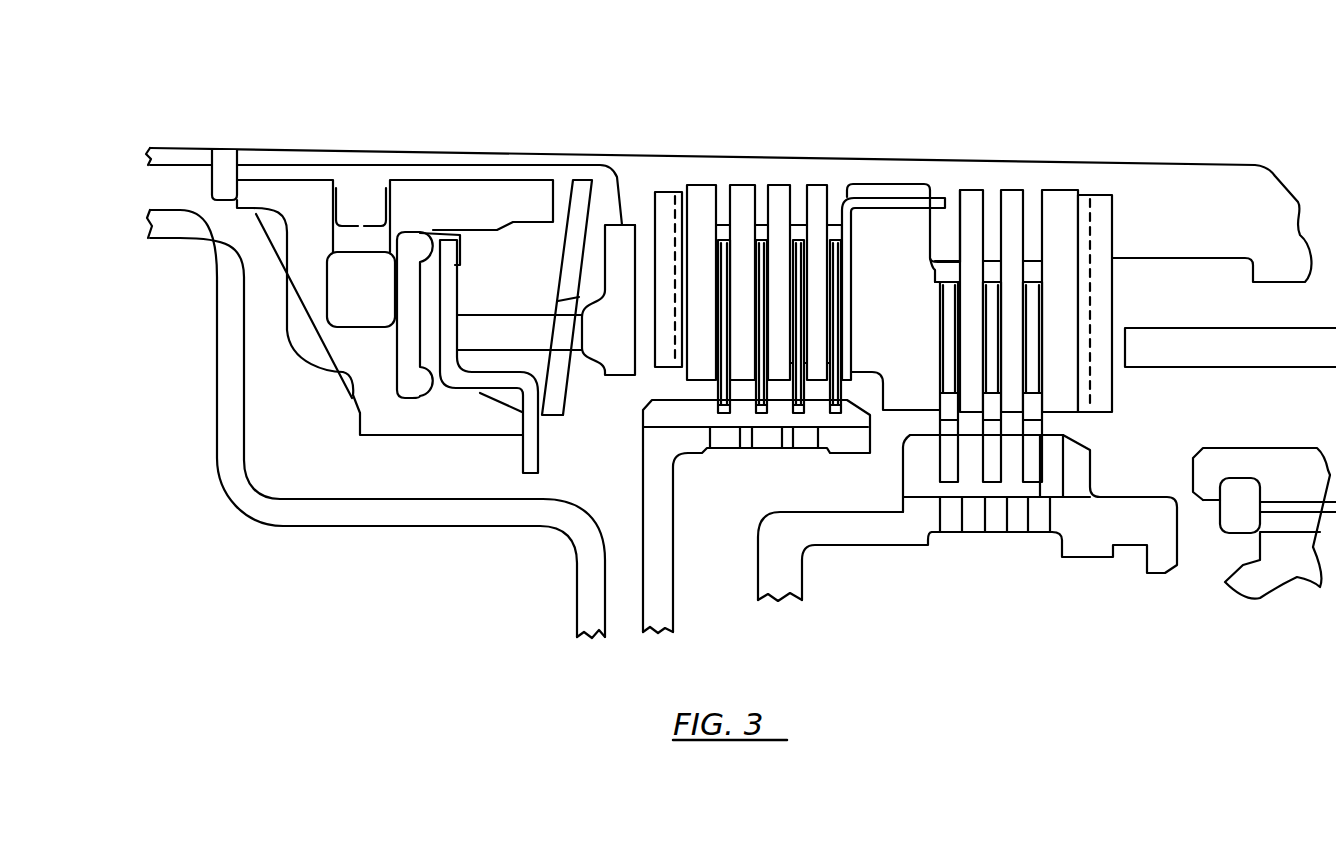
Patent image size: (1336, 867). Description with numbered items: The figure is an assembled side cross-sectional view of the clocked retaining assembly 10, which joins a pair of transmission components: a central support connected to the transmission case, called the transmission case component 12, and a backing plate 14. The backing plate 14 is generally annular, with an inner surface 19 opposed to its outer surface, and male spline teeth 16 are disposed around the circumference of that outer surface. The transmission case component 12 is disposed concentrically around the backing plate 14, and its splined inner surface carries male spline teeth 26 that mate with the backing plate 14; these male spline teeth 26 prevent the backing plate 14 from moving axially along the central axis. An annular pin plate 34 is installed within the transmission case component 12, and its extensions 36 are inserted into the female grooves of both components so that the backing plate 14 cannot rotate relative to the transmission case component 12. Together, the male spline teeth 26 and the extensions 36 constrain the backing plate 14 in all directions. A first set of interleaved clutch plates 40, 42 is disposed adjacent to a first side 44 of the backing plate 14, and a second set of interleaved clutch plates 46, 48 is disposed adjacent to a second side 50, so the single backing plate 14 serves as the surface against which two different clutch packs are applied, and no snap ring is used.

The clocked retaining assembly 10 is at (1185, 125).
The transmission case component 12 is at (638, 197).
The backing plate 14 is at (947, 225).
The male spline teeth 16 is at (875, 190).
The inner surface 19 is at (900, 413).
The male spline teeth 26 is at (838, 228).
The annular pin plate 34 is at (840, 255).
The extensions 36 is at (910, 233).
The first set of interleaved clutch plates 40 is at (1062, 208).
The first set of interleaved clutch plates 42 is at (1035, 483).
The first side 44 is at (942, 318).
The second set of interleaved clutch plates 46 is at (743, 223).
The second set of interleaved clutch plates 48 is at (795, 413).
The second side 50 is at (840, 348).